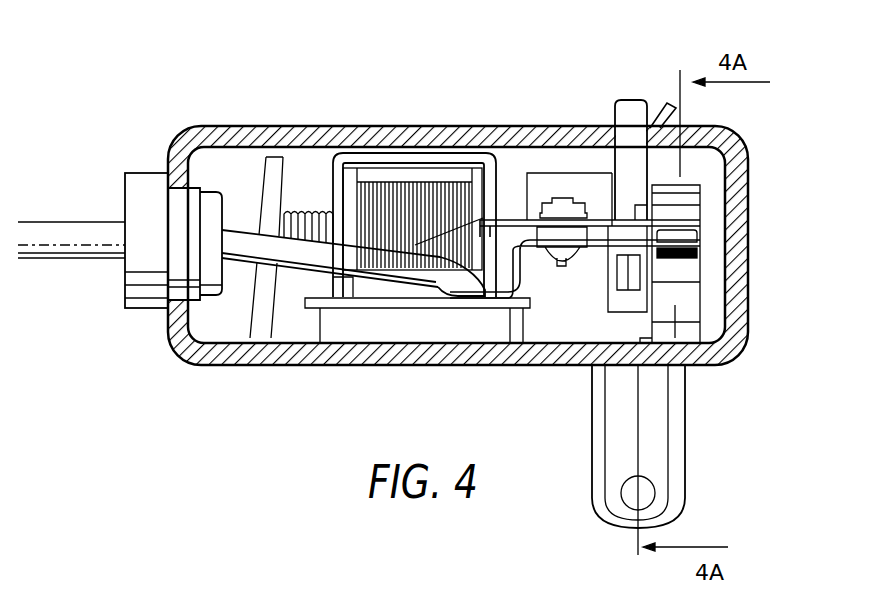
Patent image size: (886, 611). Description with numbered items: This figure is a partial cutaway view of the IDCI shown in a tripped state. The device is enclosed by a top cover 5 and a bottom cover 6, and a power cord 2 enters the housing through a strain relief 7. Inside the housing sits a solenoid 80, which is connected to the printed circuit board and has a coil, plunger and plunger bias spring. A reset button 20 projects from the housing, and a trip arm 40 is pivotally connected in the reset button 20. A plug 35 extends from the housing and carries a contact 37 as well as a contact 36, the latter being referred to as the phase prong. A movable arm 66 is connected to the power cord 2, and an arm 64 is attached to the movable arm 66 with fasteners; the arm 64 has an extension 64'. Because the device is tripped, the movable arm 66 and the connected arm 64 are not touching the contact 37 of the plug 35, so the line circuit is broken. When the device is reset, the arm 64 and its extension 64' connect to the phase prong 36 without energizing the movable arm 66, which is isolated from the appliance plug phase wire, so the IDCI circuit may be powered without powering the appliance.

The power cord 2 is at (73, 233).
The top cover 5 is at (192, 127).
The bottom cover 6 is at (378, 365).
The strain relief 7 is at (150, 188).
The reset button 20 is at (627, 110).
The plug 35 is at (650, 440).
The contact 36 is at (745, 328).
The contact 37 is at (700, 207).
The trip arm 40 is at (673, 108).
The arm 64 is at (650, 229).
The extension 64' is at (737, 275).
The movable arm 66 is at (700, 260).
The solenoid 80 is at (346, 152).